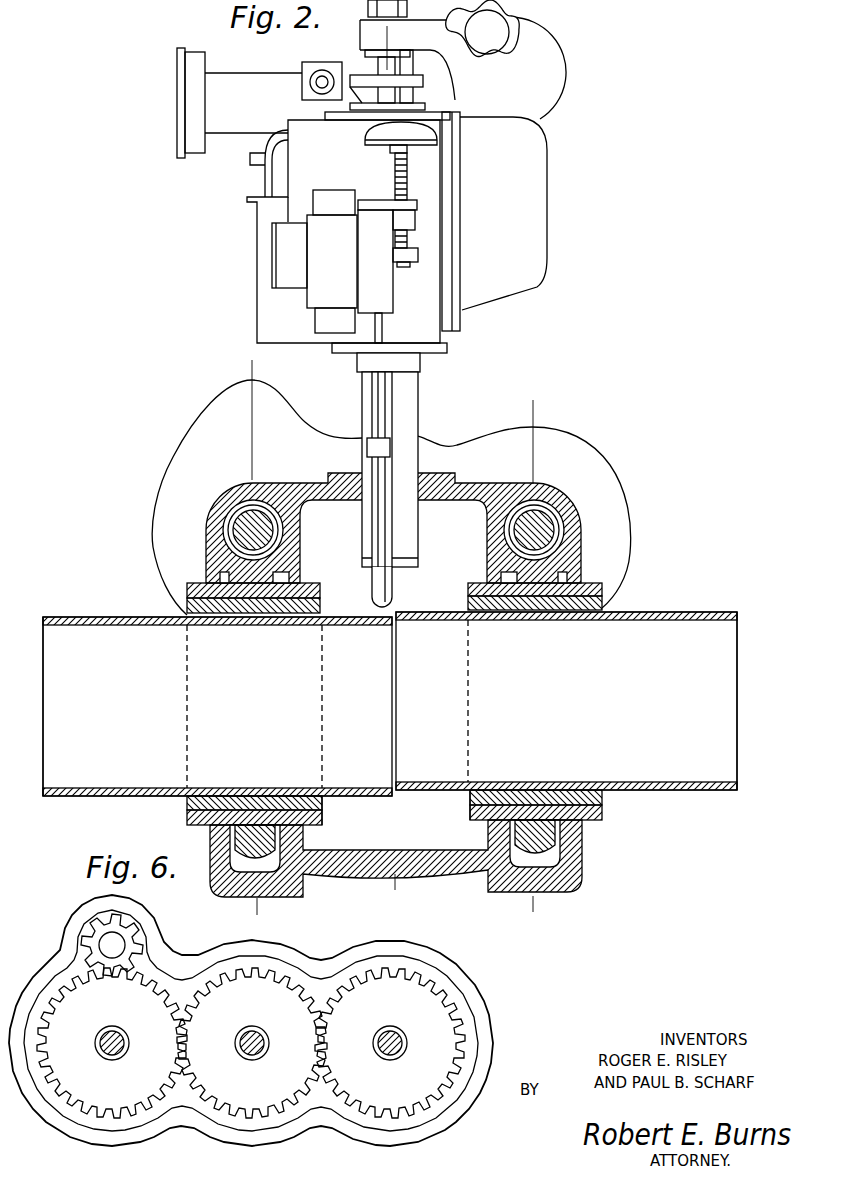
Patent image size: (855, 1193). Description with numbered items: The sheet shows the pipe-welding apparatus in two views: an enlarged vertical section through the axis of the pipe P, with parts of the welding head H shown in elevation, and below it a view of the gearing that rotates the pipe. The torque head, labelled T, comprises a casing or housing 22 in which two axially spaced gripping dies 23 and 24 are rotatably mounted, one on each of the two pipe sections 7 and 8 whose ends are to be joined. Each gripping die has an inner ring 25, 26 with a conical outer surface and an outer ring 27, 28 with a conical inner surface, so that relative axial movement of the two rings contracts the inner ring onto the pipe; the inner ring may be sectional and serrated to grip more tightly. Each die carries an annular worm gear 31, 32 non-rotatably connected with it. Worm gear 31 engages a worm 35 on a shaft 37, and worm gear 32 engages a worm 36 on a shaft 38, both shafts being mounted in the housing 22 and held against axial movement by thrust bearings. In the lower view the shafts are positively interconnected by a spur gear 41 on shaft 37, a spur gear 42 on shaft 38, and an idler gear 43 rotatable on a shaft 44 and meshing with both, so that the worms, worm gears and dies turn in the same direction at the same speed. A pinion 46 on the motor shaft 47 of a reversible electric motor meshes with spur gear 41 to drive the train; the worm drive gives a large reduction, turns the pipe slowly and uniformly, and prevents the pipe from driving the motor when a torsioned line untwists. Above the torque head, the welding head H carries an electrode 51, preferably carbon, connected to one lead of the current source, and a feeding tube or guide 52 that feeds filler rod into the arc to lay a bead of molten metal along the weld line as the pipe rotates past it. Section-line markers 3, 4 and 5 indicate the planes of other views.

In FIG. 2, the section line 5- 5 is at (396, 44).
In FIG. 2, the welding head H is at (549, 200).
In FIG. 2, the boom 3 is at (266, 367).
In FIG. 2, the section line 4- 4 is at (546, 410).
In FIG. 2, the casing or housing 22 is at (438, 477).
In FIG. 2, the tool housing T is at (604, 450).
In FIG. 6, the tool housing T is at (466, 983).
In FIG. 2, the worm 35 is at (226, 531).
In FIG. 2, the worm 36 is at (562, 529).
In FIG. 2, the gear ring 31 is at (272, 580).
In FIG. 2, the gear ring 32 is at (515, 581).
In FIG. 2, the feeding tube or guide 52 is at (372, 590).
In FIG. 2, the electrode 51 is at (394, 593).
In FIG. 2, the pipe P is at (50, 689).
In FIG. 2, the pipe section 7 is at (70, 792).
In FIG. 2, the pipe section 8 is at (718, 788).
In FIG. 2, the gripping die 23 is at (187, 812).
In FIG. 2, the inner ring 25 is at (322, 804).
In FIG. 2, the outer ring 27 is at (322, 818).
In FIG. 2, the inner ring 26 is at (470, 803).
In FIG. 2, the outer ring 28 is at (470, 815).
In FIG. 2, the gripping die 24 is at (602, 812).
In FIG. 6, the motor shaft 47 is at (110, 945).
In FIG. 6, the pinion 46 is at (145, 935).
In FIG. 6, the shaft 37 is at (125, 1043).
In FIG. 6, the shaft 44 is at (266, 1043).
In FIG. 6, the shaft 38 is at (403, 1043).
In FIG. 6, the spur gear 41 is at (77, 1105).
In FIG. 6, the idler gear 43 is at (225, 1098).
In FIG. 6, the spur gear 42 is at (412, 1105).